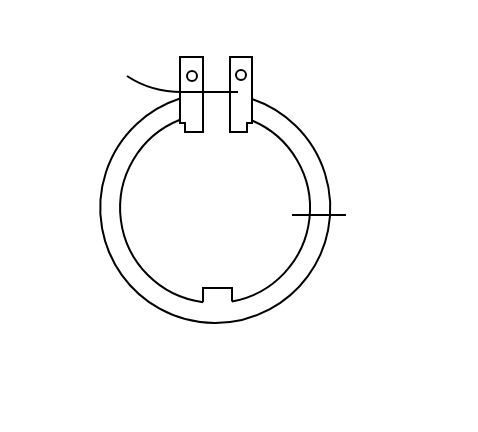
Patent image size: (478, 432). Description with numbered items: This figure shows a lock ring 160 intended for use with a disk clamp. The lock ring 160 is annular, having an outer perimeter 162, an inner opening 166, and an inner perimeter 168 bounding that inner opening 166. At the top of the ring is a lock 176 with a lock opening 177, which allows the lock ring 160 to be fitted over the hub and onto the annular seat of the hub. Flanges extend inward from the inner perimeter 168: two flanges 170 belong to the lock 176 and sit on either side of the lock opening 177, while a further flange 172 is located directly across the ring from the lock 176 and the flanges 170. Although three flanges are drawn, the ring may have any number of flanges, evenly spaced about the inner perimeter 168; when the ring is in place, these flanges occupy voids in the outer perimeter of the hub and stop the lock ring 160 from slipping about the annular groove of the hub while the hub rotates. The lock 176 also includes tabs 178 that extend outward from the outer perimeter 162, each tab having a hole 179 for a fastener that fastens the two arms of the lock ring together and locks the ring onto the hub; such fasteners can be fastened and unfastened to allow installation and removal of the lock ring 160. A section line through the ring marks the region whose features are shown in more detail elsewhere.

The lock ring 160 is at (150, 26).
The outer perimeter 162 is at (98, 213).
The inner opening 166 is at (233, 221).
The inner perimeter 168 is at (283, 273).
The flanges 170 is at (243, 123).
The flange 172 is at (217, 293).
The lock 176 is at (268, 68).
The lock opening 177 is at (215, 71).
The tabs 178 is at (193, 71).
The holes 179 is at (241, 70).